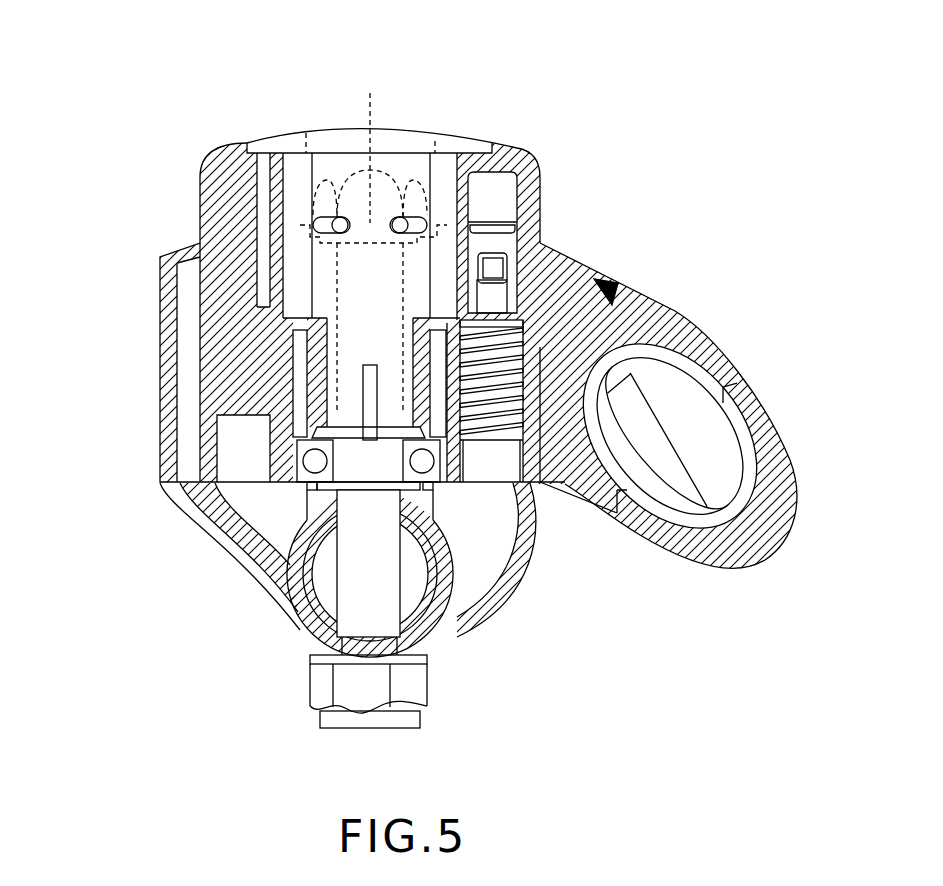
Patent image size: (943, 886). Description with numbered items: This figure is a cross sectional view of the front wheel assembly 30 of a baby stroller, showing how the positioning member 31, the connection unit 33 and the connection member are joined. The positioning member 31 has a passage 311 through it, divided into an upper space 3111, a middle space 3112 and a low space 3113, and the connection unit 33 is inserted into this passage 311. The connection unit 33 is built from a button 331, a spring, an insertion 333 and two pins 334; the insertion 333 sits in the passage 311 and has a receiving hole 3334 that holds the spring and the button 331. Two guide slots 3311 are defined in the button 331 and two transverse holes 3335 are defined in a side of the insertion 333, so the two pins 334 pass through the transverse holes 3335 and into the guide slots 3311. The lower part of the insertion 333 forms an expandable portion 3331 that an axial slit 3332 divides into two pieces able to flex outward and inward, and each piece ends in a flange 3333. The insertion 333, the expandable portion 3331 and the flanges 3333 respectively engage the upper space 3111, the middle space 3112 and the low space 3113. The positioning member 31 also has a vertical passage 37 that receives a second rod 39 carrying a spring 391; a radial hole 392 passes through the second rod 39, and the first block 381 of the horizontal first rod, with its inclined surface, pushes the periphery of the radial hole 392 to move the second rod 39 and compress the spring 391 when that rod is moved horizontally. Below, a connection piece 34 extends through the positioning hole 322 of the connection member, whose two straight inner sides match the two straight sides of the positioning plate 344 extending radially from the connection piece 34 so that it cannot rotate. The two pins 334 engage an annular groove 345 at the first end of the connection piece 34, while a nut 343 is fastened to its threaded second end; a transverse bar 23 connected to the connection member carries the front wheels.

The front wheel assembly 30 is at (175, 112).
The positioning member 31 is at (203, 191).
The connection unit 33 is at (277, 144).
The annular groove 345 is at (370, 146).
The button 331 is at (410, 215).
The receiving hole 3334 is at (395, 145).
The guide slots 3311 is at (430, 205).
The pins 334 is at (403, 215).
The vertical passage 37 is at (500, 190).
The transverse holes 3335 is at (470, 220).
The upper space 3111 is at (188, 235).
The passage 311 is at (295, 223).
The second rod 39 is at (497, 243).
The first block 381 is at (493, 267).
The insertion 333 is at (312, 268).
The radial hole 392 is at (545, 314).
The expandable portion 3331 is at (340, 338).
The middle space 3112 is at (325, 368).
The axial slit 3332 is at (365, 385).
The low space 3113 is at (226, 454).
The flange 3333 is at (320, 431).
The positioning hole 322 is at (246, 556).
The positioning plate 344 is at (313, 487).
The spring 391 is at (532, 484).
The connection piece 34 is at (383, 563).
The transverse bar 23 is at (303, 633).
The nut 343 is at (417, 693).